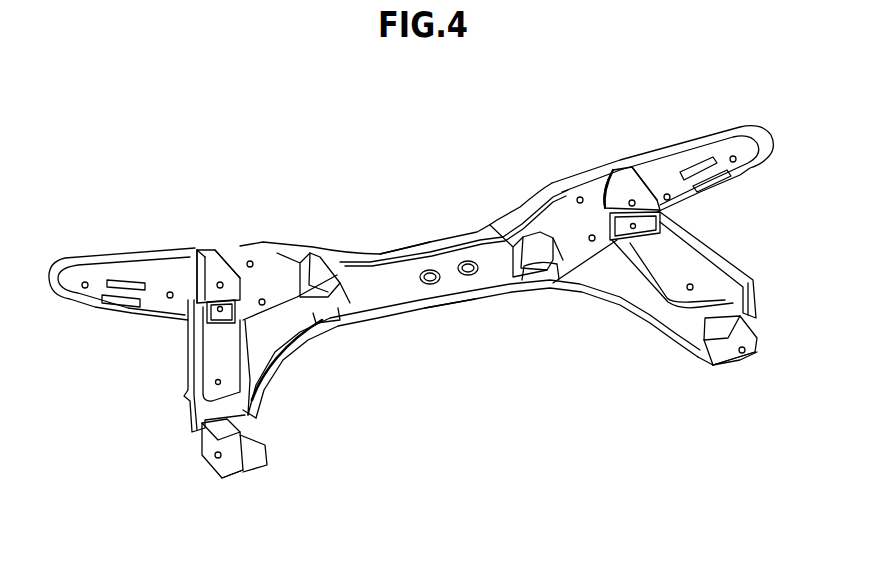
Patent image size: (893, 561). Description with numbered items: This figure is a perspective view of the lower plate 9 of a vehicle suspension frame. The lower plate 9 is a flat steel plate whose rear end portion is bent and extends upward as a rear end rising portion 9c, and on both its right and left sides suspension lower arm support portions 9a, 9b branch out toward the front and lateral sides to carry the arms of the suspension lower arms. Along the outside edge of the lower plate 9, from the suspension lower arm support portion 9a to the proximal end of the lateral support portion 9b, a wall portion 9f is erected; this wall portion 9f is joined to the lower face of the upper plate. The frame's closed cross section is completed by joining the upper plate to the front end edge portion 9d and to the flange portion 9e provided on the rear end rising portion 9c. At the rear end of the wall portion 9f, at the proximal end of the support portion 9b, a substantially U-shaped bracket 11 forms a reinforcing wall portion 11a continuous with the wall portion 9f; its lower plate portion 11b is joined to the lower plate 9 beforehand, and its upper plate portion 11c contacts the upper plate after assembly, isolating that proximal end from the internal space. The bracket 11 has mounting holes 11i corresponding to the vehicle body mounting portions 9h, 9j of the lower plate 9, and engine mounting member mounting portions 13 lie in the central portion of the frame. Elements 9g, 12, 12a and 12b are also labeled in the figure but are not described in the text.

The lower plate 9 is at (396, 320).
The suspension lower arm support portion 9a is at (253, 450).
The suspension lower arm support portion 9b is at (148, 306).
The rear end rising portion 9c is at (497, 226).
The front end edge portion 9d is at (507, 292).
The flange portion 9e is at (430, 240).
The wall portion 9f is at (190, 350).
The slot / hole 9g is at (170, 292).
The vehicle body mounting portion 9h is at (688, 290).
The vehicle body mounting portion 9j is at (85, 282).
The bracket 11 is at (221, 280).
The reinforcing wall portion 11a is at (193, 248).
The lower plate portion 11b is at (237, 313).
The upper plate portion 11c is at (218, 268).
The mounting holes 11i is at (226, 272).
The mounting member 12 is at (243, 473).
The mounting hole 12a is at (203, 447).
The mounting plate 12b is at (218, 467).
The engine mounting member mounting portions 13 is at (473, 274).